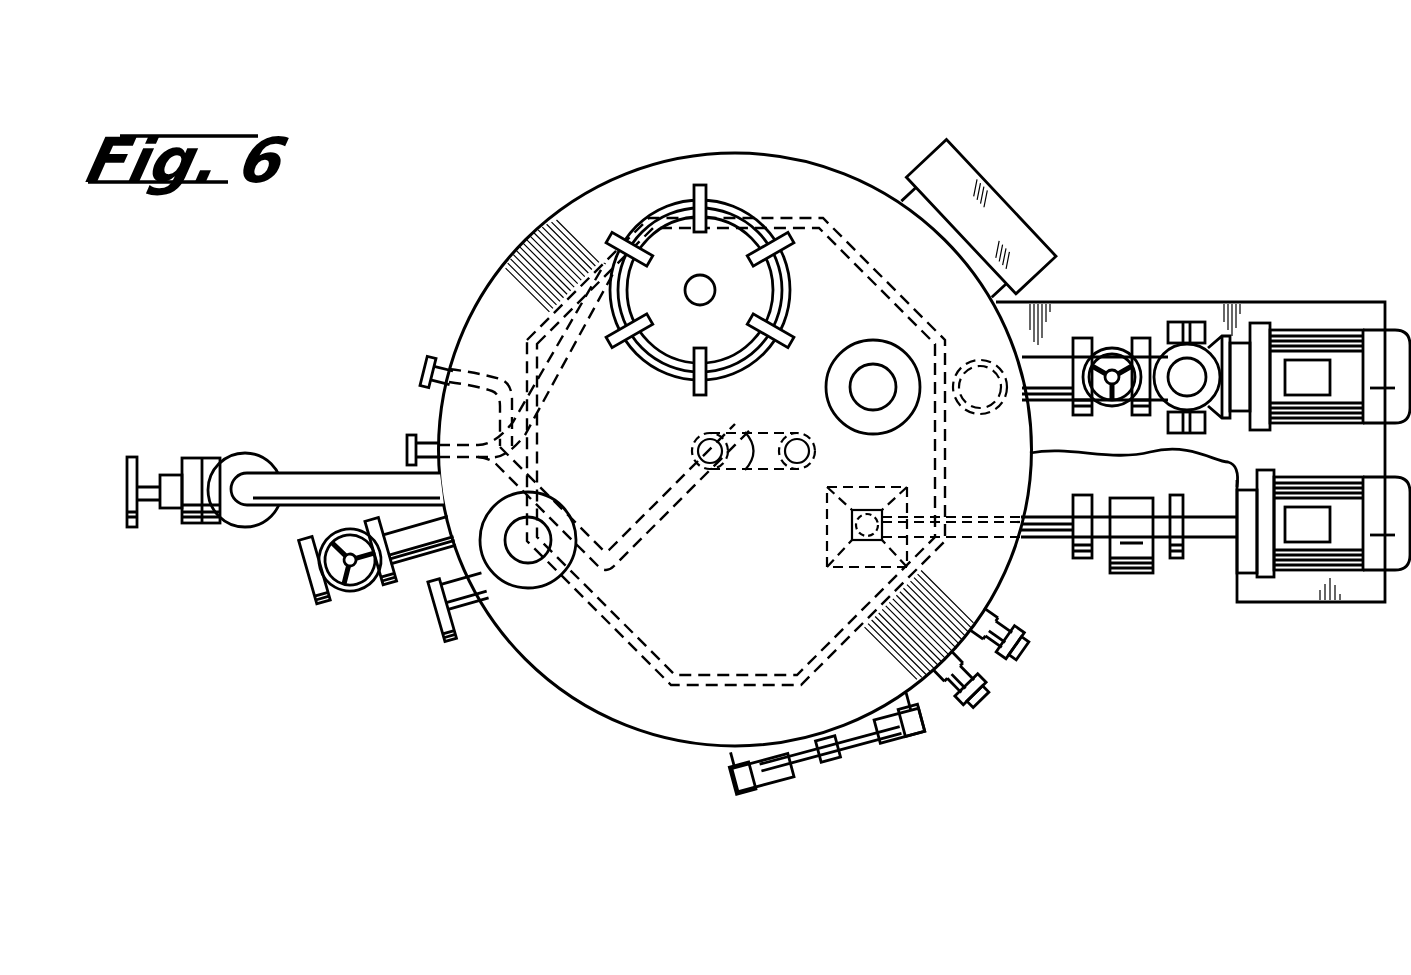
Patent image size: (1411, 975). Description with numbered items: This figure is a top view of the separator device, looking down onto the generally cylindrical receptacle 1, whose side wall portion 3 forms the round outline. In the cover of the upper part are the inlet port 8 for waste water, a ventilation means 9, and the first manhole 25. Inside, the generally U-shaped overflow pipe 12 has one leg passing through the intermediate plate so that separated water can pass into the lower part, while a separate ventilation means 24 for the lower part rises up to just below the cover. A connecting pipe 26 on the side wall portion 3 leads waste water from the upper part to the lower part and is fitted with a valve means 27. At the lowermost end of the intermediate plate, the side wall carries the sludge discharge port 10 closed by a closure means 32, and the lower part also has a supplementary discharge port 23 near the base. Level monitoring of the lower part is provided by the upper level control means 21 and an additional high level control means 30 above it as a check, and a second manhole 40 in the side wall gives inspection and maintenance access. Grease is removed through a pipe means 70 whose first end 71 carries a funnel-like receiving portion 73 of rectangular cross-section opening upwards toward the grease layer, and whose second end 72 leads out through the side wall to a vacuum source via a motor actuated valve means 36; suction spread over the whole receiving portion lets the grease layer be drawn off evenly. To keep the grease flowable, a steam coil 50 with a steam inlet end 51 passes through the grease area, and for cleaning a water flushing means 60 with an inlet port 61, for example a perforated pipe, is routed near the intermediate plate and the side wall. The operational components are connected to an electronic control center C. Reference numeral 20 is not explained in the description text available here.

The receptacle 1 is at (858, 97).
The side wall portion 3 is at (646, 749).
The inlet port 8 is at (530, 583).
The ventilation means 9 is at (846, 375).
The discharge port 10 is at (414, 548).
The overflow pipe 12 is at (771, 478).
The pump and valve assembly 20 is at (1316, 275).
The upper level control means 21 is at (1030, 652).
The supplementary discharge port 23 is at (448, 644).
The ventilation means 24 is at (986, 376).
The first manhole 25 is at (678, 232).
The connecting pipe 26 is at (299, 475).
The valve means 27 is at (205, 462).
The high level control means 30 is at (976, 710).
The closure means 32 is at (353, 576).
The motor actuated valve means 36 is at (1131, 578).
The second manhole 40 is at (806, 762).
The steam coil 50 is at (561, 374).
The steam inlet end 51 is at (408, 448).
The water flushing means 60 is at (766, 667).
The inlet port 61 is at (428, 364).
The pipe means 70 is at (968, 512).
The first end 71 is at (924, 500).
The second end 72 is at (1052, 540).
The receiving portion 73 is at (866, 499).
The electronic control center C is at (1000, 206).